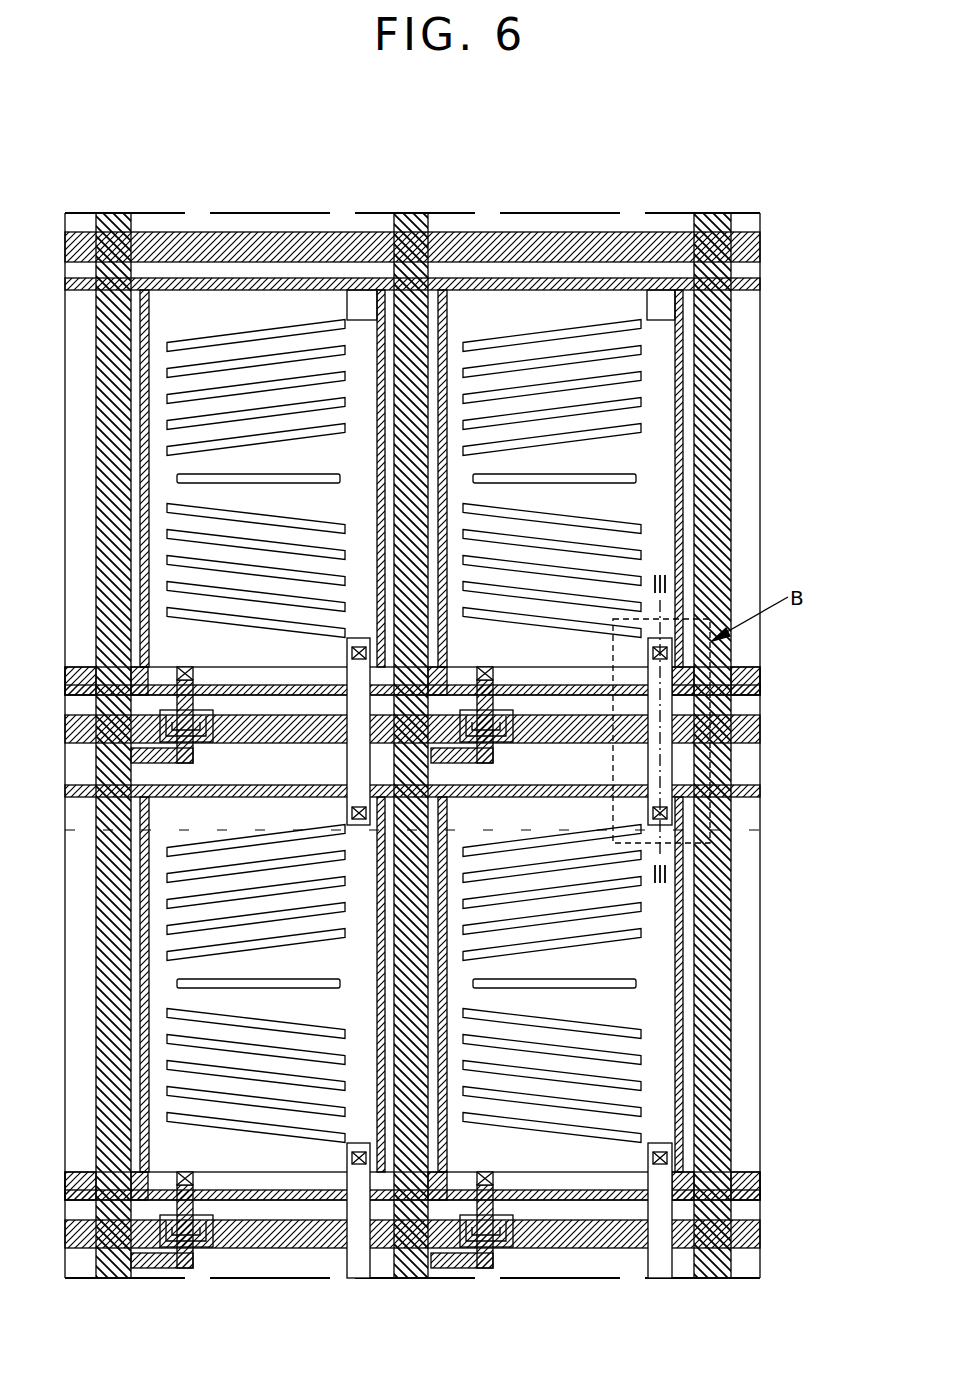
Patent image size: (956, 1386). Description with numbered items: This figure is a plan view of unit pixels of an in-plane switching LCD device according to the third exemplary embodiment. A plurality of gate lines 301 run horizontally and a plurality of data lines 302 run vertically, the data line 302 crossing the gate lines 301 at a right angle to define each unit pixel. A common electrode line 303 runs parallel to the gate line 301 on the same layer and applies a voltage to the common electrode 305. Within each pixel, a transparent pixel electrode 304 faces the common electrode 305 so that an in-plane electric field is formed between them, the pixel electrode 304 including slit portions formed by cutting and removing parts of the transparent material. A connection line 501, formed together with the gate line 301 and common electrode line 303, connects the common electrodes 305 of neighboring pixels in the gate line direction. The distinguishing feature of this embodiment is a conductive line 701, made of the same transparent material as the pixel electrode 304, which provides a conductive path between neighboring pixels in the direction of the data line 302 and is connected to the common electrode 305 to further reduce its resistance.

The gate line 301 is at (761, 248).
The data line 302 is at (711, 1278).
The common electrode line 303 is at (761, 683).
The pixel electrode 304 is at (648, 452).
The common electrode 305 is at (688, 335).
The connection line 501 is at (748, 287).
The conductive line 701 is at (705, 758).